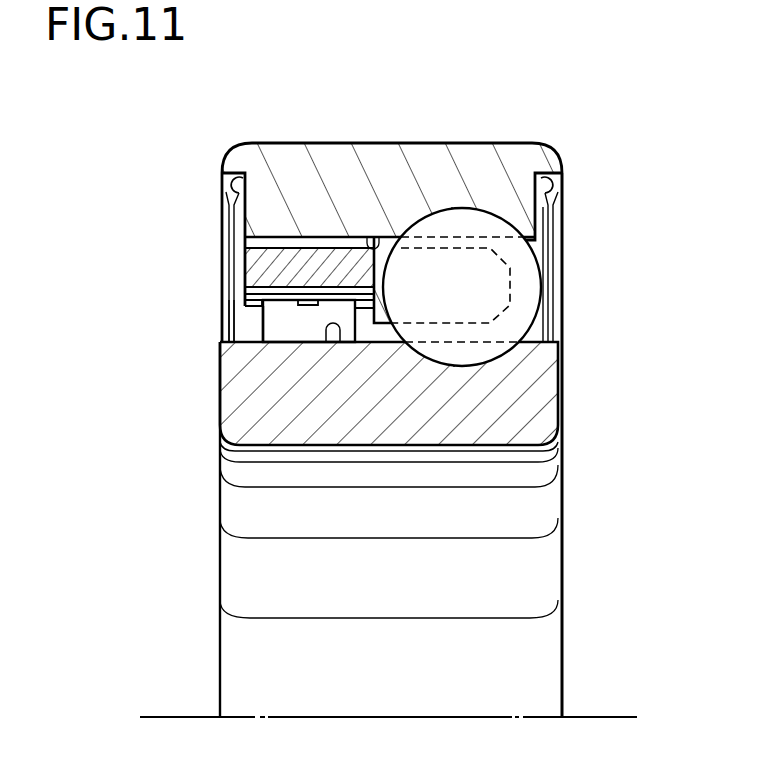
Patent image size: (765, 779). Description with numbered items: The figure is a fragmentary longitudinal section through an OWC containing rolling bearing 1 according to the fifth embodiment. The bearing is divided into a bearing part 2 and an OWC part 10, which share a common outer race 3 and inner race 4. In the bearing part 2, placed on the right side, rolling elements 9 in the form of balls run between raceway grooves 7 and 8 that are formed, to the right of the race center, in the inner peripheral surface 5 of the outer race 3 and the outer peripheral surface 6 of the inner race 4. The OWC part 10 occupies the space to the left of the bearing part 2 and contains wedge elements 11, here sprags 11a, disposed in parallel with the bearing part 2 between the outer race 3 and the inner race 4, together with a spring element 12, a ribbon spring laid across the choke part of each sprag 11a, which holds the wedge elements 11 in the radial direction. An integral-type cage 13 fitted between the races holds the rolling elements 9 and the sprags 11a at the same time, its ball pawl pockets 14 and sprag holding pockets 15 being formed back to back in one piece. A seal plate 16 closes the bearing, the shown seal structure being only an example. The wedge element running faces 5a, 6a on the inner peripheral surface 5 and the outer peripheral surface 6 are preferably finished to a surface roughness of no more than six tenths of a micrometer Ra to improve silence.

The OWC containing rolling bearing 1 is at (576, 573).
The bearing part 2 is at (392, 201).
The outer race 3 is at (385, 210).
The inner race 4 is at (417, 424).
The inner peripheral surface of the outer race 5 is at (340, 250).
The wedge element running face 5a is at (373, 237).
The outer peripheral surface of the inner race 6 is at (309, 341).
The wedge element running face 6a is at (340, 342).
The raceway groove 7 is at (458, 207).
The raceway groove 8 is at (461, 367).
The rolling element 9 is at (522, 308).
The OWC part 10 is at (380, 282).
The wedge element 11 is at (244, 412).
The sprag 11a is at (258, 346).
The spring element 12 is at (262, 318).
The integral-type cage 13 is at (303, 248).
The ball pawl pocket 14 is at (403, 343).
The sprag holding pocket 15 is at (283, 228).
The seal plate 16 is at (228, 275).